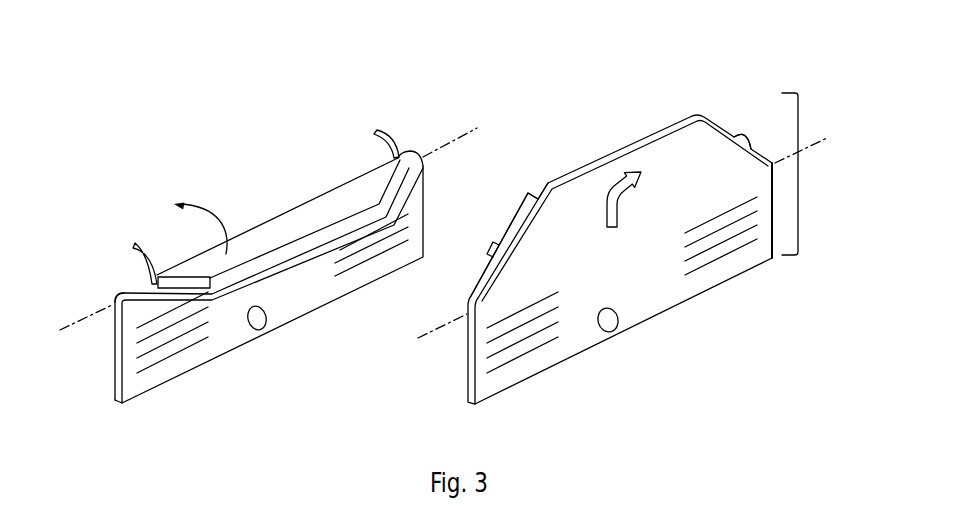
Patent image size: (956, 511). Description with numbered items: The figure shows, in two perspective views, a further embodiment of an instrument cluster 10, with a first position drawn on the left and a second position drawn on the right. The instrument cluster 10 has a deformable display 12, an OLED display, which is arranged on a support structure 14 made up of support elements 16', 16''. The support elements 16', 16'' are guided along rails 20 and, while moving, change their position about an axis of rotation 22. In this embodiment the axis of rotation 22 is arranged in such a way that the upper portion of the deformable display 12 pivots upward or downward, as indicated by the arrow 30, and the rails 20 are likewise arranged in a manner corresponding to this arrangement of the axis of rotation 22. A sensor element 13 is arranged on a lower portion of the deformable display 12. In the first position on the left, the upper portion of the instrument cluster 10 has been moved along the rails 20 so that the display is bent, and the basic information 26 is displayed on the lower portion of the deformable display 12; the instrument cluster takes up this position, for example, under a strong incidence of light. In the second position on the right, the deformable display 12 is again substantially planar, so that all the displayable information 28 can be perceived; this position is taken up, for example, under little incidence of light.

The instrument cluster 10 is at (142, 170).
The deformable display 12 is at (304, 316).
The sensor element 13 is at (259, 327).
The support structure 14 is at (278, 207).
The support element 16' is at (418, 215).
The support element 16'' is at (114, 287).
The rails 20 is at (132, 250).
The axis of rotation 22 is at (462, 135).
The basic information 26 is at (207, 347).
The displayable information 28 is at (799, 177).
The arrow 30 is at (209, 212).